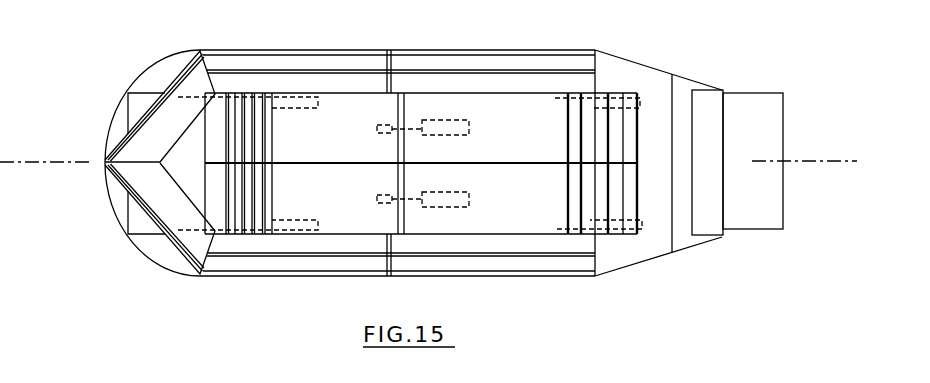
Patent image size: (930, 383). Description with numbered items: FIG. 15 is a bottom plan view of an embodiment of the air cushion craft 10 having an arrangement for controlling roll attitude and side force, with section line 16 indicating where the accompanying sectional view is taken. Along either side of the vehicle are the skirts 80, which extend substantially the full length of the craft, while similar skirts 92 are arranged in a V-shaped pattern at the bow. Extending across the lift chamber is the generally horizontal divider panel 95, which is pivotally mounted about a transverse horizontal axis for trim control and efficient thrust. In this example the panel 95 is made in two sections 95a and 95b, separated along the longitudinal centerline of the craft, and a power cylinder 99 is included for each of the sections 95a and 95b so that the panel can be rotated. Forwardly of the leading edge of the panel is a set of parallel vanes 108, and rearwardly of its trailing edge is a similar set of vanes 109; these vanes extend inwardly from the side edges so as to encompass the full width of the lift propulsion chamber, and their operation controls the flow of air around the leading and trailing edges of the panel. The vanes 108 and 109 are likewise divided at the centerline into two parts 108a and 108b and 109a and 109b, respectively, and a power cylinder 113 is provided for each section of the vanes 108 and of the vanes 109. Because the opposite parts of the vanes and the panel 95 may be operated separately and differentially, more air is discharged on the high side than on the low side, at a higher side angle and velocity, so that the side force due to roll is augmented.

The vehicle hull 10 is at (122, 64).
The section line 16- 16 is at (12, 143).
The skirt 80 is at (479, 58).
The skirt 92 is at (146, 223).
The divider panel 95 is at (421, 126).
The section of the panel 95a is at (421, 128).
The section of the panel 95b is at (421, 198).
The power cylinder 99 is at (445, 120).
The vanes 108 is at (274, 130).
The part of the vanes 108a is at (272, 146).
The part of the vanes 108b is at (272, 203).
The vanes 109 is at (596, 199).
The part of the vanes 109a is at (615, 145).
The part of the vanes 109b is at (617, 200).
The power cylinder 113 is at (322, 104).